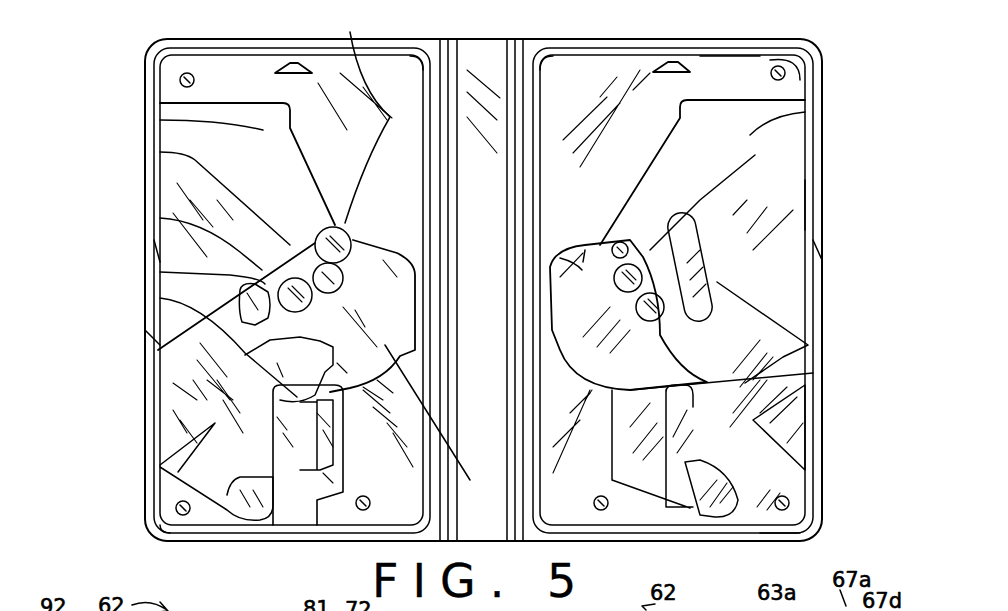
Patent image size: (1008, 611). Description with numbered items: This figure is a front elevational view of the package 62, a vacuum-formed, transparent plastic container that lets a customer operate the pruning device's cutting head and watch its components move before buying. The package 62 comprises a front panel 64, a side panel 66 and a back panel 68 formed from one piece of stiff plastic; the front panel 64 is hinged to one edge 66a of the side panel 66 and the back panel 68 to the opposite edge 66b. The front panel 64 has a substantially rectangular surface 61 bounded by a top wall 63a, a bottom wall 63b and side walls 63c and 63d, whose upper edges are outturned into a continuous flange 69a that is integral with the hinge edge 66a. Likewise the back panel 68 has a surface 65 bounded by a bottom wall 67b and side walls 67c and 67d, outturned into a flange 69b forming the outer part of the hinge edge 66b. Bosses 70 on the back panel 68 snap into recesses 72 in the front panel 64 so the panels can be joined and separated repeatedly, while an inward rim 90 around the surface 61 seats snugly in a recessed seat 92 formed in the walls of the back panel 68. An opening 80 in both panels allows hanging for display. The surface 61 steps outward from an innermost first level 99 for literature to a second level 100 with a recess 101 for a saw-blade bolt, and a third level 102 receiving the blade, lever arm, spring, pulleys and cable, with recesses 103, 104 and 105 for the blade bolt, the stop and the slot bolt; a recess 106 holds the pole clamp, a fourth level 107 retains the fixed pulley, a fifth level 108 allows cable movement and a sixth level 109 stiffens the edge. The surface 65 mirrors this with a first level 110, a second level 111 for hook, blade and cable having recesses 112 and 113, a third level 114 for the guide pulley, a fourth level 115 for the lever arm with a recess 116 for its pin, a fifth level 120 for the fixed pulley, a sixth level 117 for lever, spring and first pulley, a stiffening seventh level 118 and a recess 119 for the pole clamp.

The recessed seat 92 is at (162, 44).
The first level 110 is at (227, 80).
The first level 99 is at (812, 40).
The side panel 66 is at (480, 271).
The edge of side panel 66a is at (503, 60).
The opposite edge of side panel 66b is at (457, 60).
The bosses 70 is at (180, 80).
The recesses 72 is at (785, 73).
The opening 80 is at (290, 65).
The side wall 67c is at (428, 47).
The side wall 63c is at (541, 48).
The top wall 63a is at (716, 47).
The rim 90 is at (757, 72).
The side wall 67d is at (152, 250).
The outturned flange 69b is at (150, 330).
The bottom wall 67b is at (193, 533).
The bottom wall 63b is at (735, 533).
The side wall 63d is at (820, 187).
The outturned flange 69a is at (820, 250).
The package 62 is at (843, 242).
The surface 61 is at (779, 143).
The back panel 68 is at (286, 278).
The sixth level 117 is at (160, 121).
The second outwardly extending recess 113 is at (160, 153).
The outwardly extending recess 116 is at (160, 219).
The fourth level 115 is at (160, 273).
The third level 114 is at (160, 299).
The surface 65 is at (352, 136).
The first outwardly extending recess 112 is at (330, 228).
The stiffening seventh level 118 is at (175, 457).
The recess 119 is at (290, 440).
The fifth level 120 is at (242, 478).
The second level 111 is at (442, 423).
The front panel 64 is at (679, 290).
The third level 102 is at (760, 132).
The outwardly extending recess 103 is at (700, 200).
The second level 100 is at (604, 245).
The recess 101 is at (618, 240).
The outwardly extending recess 104 is at (740, 380).
The outwardly extending recess 105 is at (700, 285).
The fifth level 108 is at (790, 342).
The sixth level 109 is at (790, 415).
The recess 106 is at (665, 448).
The fourth level 107 is at (735, 475).